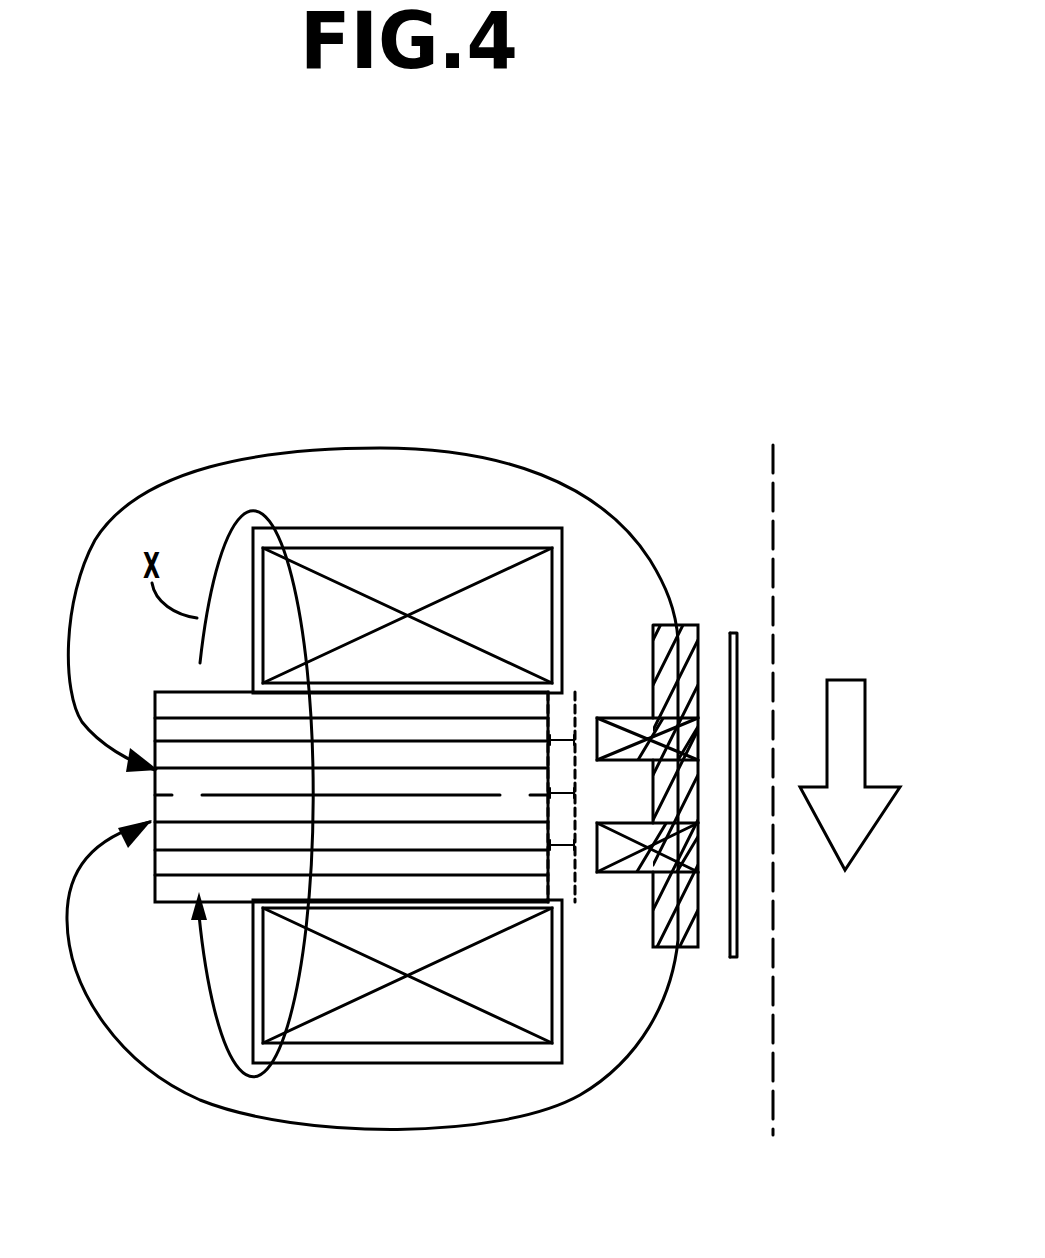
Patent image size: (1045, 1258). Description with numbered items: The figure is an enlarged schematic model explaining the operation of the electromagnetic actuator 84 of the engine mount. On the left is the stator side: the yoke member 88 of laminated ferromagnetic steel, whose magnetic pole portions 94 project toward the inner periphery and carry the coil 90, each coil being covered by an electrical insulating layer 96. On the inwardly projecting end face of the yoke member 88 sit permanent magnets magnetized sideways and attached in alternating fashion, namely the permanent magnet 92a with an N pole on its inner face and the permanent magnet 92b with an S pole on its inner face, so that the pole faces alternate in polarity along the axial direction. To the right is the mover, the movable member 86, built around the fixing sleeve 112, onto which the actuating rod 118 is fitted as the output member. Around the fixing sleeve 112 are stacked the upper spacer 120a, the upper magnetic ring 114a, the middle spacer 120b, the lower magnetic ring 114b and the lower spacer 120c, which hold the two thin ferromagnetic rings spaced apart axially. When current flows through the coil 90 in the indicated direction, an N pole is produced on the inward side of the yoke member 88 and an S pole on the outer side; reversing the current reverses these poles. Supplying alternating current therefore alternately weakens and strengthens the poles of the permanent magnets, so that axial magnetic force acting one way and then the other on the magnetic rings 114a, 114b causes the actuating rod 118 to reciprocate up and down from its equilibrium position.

The electromagnetic actuator 84 is at (235, 440).
The movable member 86 is at (768, 763).
The yoke member 88 is at (313, 841).
The magnetic pole portion 94 is at (207, 857).
The coil 90 is at (385, 1012).
The electrical insulating layer 96 is at (560, 618).
The permanent magnet 92a is at (550, 900).
The permanent magnet 92b is at (552, 690).
The fixing sleeve 112 is at (714, 928).
The upper magnetic ring 114a is at (733, 768).
The lower magnetic ring 114b is at (700, 857).
The actuating rod 118 is at (743, 645).
The upper spacer 120a is at (685, 660).
The middle spacer 120b is at (700, 722).
The lower spacer 120c is at (687, 915).